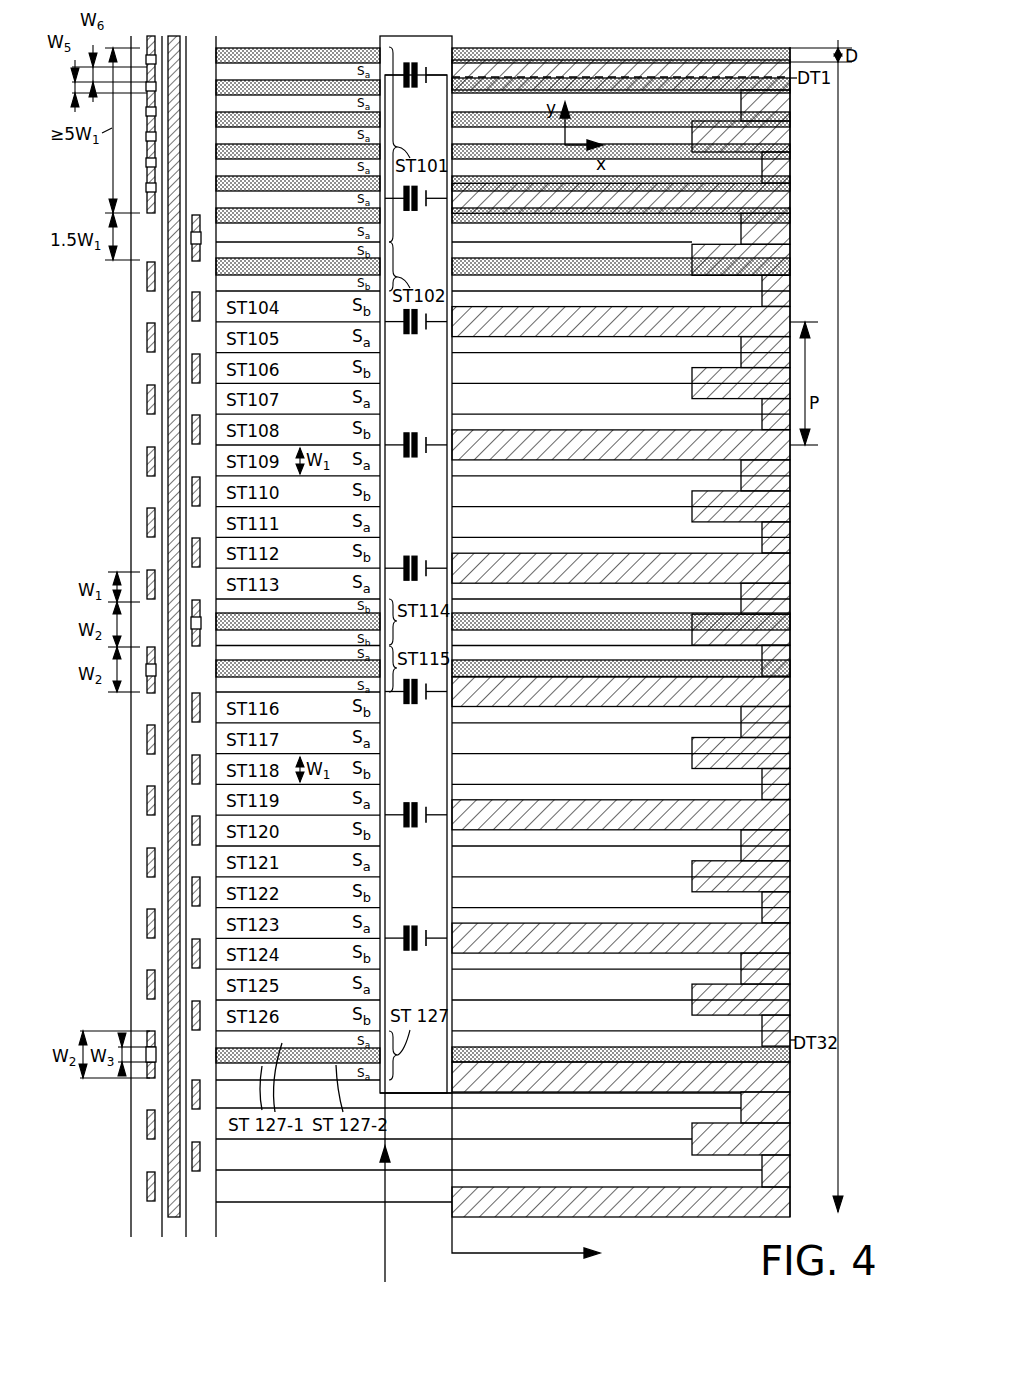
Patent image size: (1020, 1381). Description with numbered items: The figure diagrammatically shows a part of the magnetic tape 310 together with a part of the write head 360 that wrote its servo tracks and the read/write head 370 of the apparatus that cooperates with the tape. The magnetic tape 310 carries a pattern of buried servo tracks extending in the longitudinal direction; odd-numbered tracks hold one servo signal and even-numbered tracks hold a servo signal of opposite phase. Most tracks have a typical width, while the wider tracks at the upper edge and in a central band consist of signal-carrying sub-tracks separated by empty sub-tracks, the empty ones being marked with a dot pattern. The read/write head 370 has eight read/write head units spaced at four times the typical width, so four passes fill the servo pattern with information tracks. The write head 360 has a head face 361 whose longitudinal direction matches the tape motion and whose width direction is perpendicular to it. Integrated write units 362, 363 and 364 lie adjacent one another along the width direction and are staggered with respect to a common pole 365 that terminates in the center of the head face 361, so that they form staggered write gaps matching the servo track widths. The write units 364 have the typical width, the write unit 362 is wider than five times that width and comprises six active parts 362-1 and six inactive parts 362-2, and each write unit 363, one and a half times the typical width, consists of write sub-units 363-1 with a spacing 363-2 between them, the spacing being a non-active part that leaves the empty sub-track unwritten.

The magnetic tape 310 is at (702, 36).
The write head 360 is at (130, 398).
The head face 361 is at (140, 438).
The write unit 362 is at (128, 109).
The active parts 362-1 is at (147, 166).
The inactive parts 362-2 is at (147, 137).
The write units 363 is at (195, 215).
The write sub-units 363-1 is at (150, 1040).
The spacing 363-2 is at (147, 1054).
The write units 364 is at (147, 286).
The common pole 365 is at (174, 1218).
The read/write head 370 is at (404, 36).